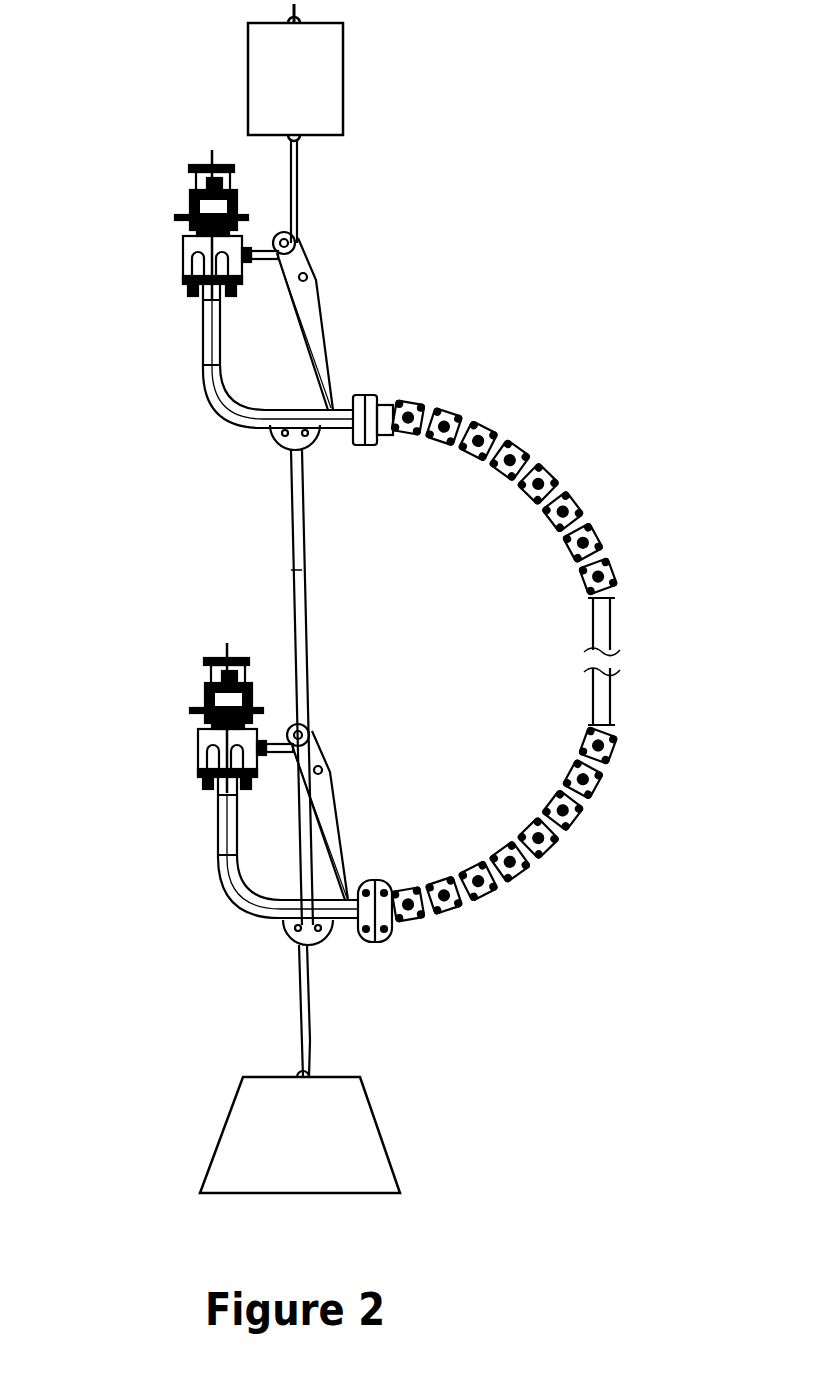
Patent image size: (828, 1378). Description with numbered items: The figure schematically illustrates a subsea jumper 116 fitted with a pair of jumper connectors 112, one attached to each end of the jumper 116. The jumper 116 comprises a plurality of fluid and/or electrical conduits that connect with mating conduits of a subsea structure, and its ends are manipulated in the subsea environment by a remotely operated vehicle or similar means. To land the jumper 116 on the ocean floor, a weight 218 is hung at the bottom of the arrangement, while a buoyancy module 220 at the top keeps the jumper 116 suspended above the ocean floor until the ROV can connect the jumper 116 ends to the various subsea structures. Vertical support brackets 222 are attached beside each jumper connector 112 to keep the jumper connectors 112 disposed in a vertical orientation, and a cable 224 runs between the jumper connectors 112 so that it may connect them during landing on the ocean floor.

The jumper connector 112 is at (162, 248).
The jumper 116 is at (560, 460).
The weight 218 is at (348, 1097).
The buoyancy module 220 is at (316, 94).
The vertical support bracket 222 is at (312, 317).
The cable 224 is at (305, 608).